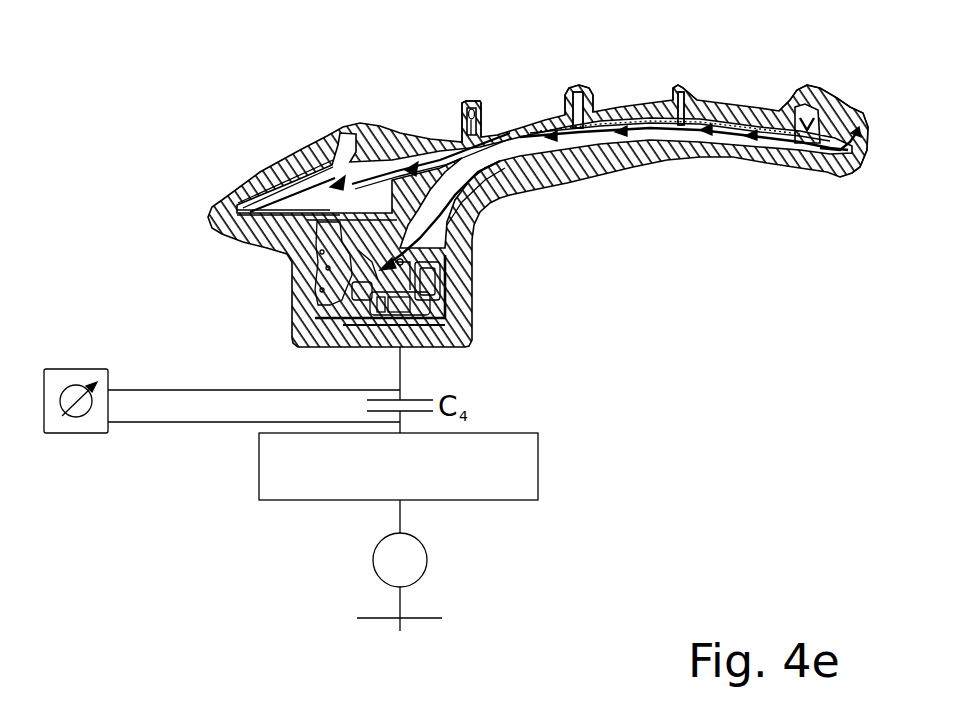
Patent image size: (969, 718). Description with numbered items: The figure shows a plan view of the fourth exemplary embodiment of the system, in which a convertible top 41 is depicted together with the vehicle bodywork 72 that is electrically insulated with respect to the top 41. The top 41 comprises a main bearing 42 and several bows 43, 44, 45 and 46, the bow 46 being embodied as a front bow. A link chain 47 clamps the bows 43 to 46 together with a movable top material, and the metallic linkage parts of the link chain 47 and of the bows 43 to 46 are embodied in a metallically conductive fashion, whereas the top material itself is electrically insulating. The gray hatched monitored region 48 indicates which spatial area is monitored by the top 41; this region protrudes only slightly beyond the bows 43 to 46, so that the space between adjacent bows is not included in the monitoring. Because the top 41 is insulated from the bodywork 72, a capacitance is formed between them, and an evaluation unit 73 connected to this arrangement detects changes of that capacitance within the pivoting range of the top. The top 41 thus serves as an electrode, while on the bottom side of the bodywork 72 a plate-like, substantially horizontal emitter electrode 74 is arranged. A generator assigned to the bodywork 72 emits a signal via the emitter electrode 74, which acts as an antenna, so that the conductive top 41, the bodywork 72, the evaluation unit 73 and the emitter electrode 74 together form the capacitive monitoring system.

The top 41 is at (517, 116).
The main bearing 42 is at (455, 338).
The bow 43 is at (472, 122).
The bow 44 is at (578, 128).
The bow 45 is at (686, 122).
The front bow 46 is at (812, 135).
The link chain 47 is at (629, 150).
The monitored region 48 is at (478, 269).
The bodywork 72 is at (510, 474).
The evaluation unit 73 is at (85, 428).
The emitter electrode 74 is at (433, 604).